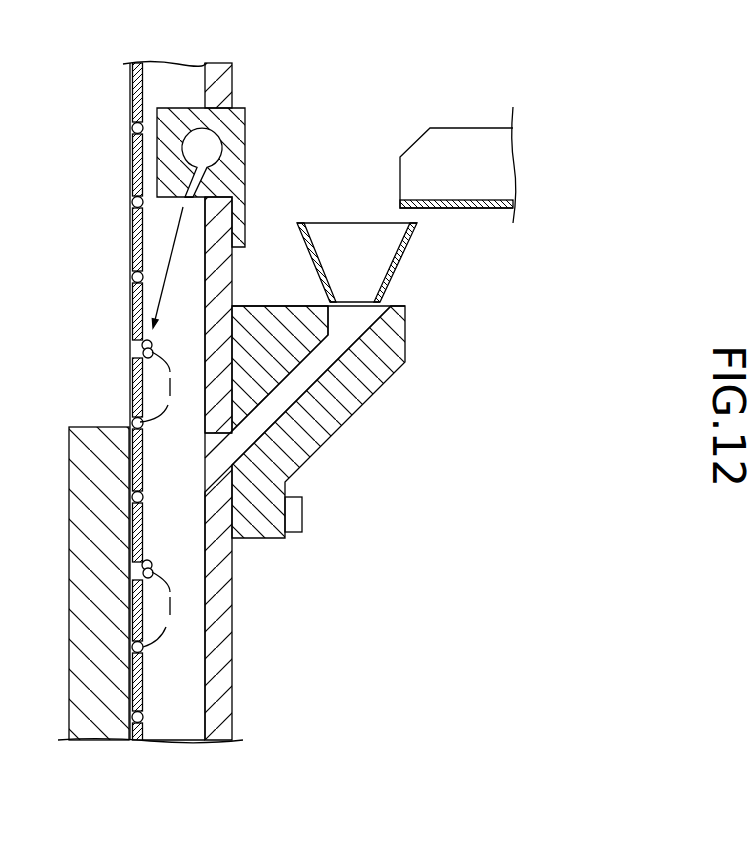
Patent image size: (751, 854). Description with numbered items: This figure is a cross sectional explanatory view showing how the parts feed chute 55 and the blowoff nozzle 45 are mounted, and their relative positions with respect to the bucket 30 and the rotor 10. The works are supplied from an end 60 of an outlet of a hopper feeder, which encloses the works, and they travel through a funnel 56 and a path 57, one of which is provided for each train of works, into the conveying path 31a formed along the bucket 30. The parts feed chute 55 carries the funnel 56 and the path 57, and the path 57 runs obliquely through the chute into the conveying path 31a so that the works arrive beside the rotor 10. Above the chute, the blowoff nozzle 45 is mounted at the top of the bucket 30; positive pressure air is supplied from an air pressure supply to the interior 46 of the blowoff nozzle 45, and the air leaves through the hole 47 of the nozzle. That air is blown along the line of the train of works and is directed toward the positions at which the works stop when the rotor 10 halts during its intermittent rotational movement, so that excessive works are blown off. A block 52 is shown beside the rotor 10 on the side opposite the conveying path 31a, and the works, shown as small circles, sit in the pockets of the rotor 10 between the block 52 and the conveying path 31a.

The rotor 10 is at (128, 155).
The bucket 30 is at (236, 676).
The conveying path 31a is at (196, 556).
The blowoff nozzle 45 is at (228, 193).
The interior of the blowoff nozzle 46 is at (222, 150).
The hole of the blowoff nozzle 47 is at (112, 262).
The block 52 is at (88, 427).
The parts feed chute 55 is at (382, 422).
The funnel 56 is at (317, 246).
The path 57 is at (315, 382).
The end of an outlet of a hopper feeder 60 is at (405, 156).